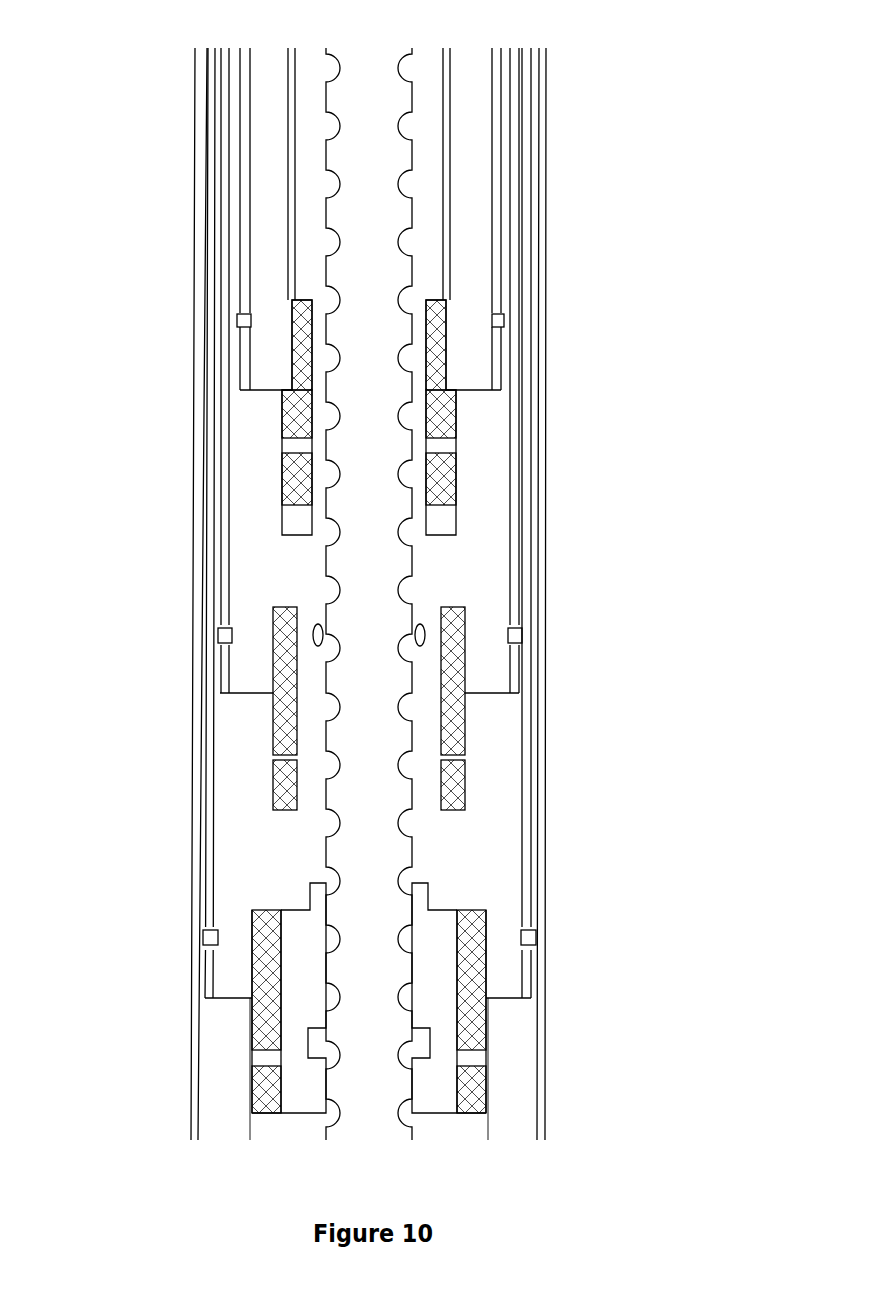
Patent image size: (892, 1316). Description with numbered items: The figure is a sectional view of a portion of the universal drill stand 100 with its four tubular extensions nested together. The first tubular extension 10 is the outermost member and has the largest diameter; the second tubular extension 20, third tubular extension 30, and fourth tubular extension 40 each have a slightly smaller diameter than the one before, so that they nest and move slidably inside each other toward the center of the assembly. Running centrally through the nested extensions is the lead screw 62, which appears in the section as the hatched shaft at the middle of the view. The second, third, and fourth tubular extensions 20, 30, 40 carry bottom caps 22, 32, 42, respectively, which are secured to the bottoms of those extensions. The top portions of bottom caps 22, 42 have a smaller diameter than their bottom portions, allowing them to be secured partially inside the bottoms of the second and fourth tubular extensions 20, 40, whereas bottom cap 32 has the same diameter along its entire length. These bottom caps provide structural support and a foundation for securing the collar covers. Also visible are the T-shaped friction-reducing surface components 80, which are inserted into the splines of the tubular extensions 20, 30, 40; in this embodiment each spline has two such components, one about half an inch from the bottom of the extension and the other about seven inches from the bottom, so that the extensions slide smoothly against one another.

The universal drill stand 100 is at (140, 152).
The lead screw 62 is at (387, 62).
The first tubular extension 10 is at (542, 992).
The second tubular extension 20 is at (522, 900).
The third tubular extension 30 is at (515, 668).
The fourth tubular extension 40 is at (493, 250).
The bottom cap 22 is at (262, 1095).
The bottom cap 32 is at (290, 730).
The bottom cap 42 is at (290, 480).
The friction-reducing surface component 80 is at (506, 320).